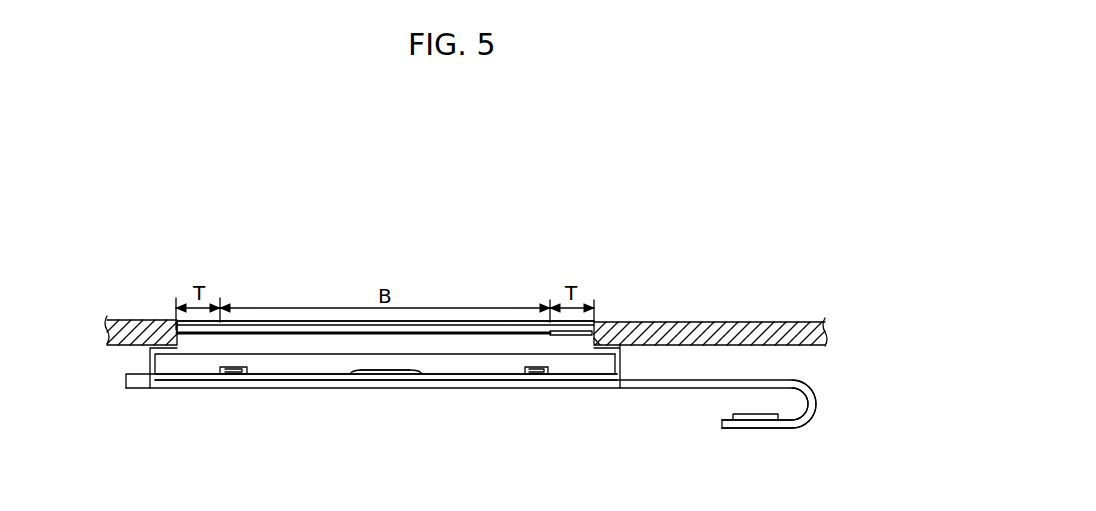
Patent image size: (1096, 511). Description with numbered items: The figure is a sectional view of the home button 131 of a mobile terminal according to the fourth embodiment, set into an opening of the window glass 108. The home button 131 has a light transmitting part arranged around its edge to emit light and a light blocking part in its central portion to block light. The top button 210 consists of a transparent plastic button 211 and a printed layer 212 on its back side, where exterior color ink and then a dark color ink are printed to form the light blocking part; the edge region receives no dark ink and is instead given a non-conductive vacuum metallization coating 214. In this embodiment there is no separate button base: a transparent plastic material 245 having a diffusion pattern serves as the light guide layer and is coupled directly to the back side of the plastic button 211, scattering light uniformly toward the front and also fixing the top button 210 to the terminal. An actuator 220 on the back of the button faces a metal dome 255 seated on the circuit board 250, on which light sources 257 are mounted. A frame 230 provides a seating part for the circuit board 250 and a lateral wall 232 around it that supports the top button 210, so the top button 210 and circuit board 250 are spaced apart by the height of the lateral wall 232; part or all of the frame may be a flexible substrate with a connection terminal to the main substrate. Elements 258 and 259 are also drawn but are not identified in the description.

The window glass 108 is at (762, 338).
The home button 131 is at (320, 284).
The top button 210 is at (597, 253).
The transparent plastic button 211 is at (488, 326).
The printed layer 212 is at (522, 331).
The coating 214 is at (575, 331).
The actuator 220 is at (370, 357).
The frame 230 is at (658, 389).
The lateral wall 232 is at (622, 365).
The transparent plastic material 245 is at (598, 340).
The circuit board 250 is at (472, 381).
The metal dome 255 is at (403, 357).
The light source 257 is at (230, 375).
The flexible printed circuit board 258 is at (797, 430).
The connector 259 is at (755, 421).